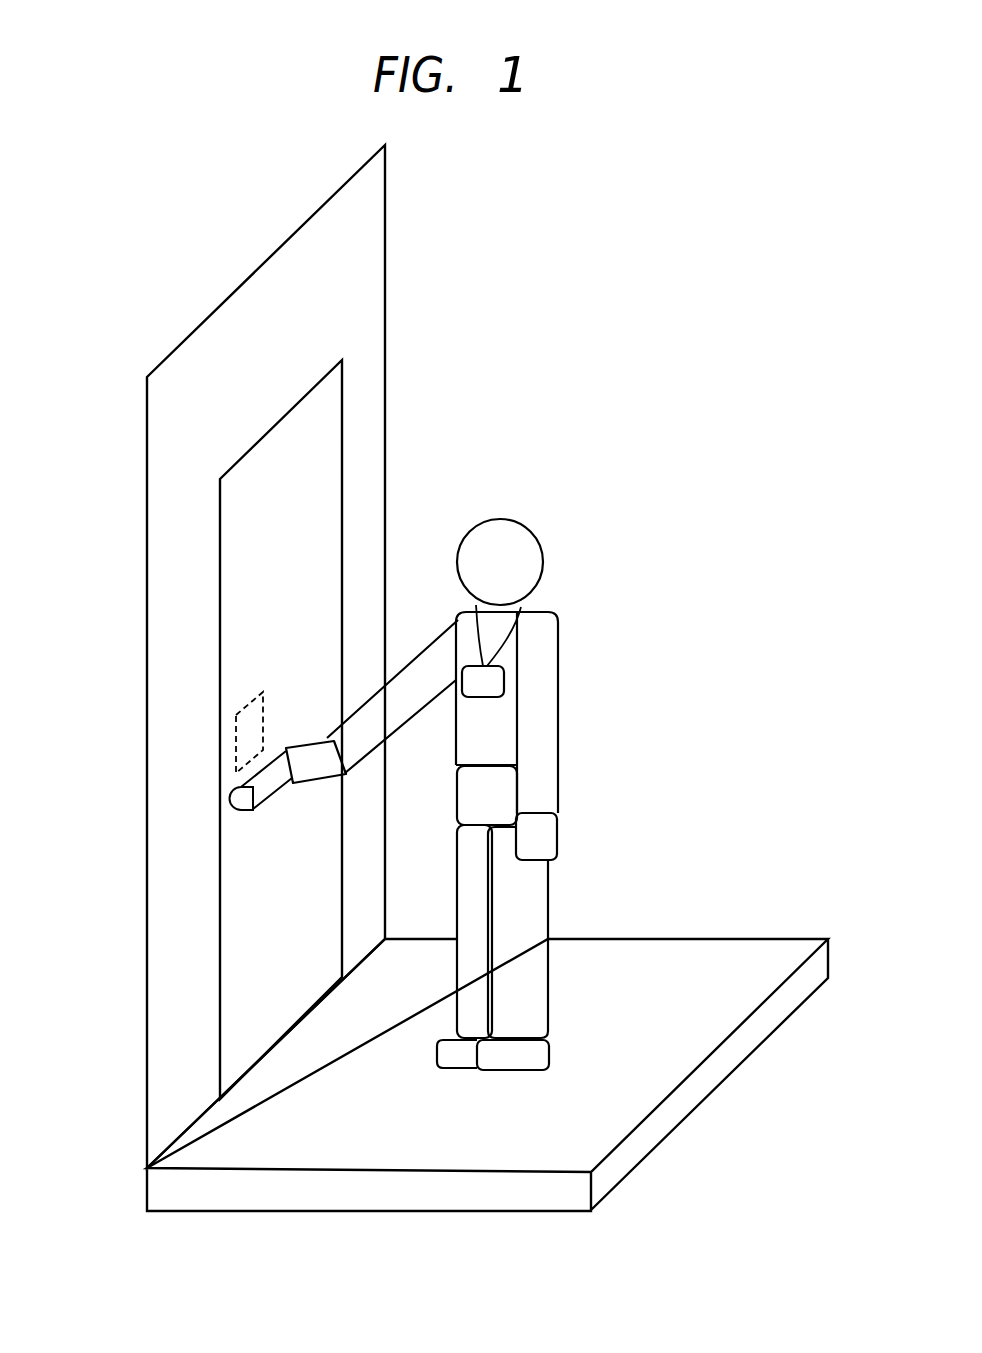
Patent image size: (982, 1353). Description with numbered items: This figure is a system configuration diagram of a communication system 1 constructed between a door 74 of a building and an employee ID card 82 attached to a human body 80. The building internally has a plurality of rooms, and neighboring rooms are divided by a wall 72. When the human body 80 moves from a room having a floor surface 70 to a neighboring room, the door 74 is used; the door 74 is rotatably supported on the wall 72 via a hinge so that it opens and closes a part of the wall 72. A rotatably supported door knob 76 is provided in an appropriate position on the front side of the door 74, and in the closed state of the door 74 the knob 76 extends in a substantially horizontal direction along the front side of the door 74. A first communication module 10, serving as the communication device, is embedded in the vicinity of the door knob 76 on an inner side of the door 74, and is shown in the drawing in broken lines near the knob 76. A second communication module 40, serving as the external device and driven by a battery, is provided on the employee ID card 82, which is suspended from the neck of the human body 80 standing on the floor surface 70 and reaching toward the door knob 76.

The communication system 1 is at (730, 447).
The first communication module 10 is at (238, 690).
The second communication module 40 is at (514, 667).
The floor surface 70 is at (620, 1104).
The wall 72 is at (182, 408).
The door 74 is at (322, 452).
The door knob 76 is at (258, 788).
The human body 80 is at (612, 808).
The employee ID card 82 is at (563, 674).